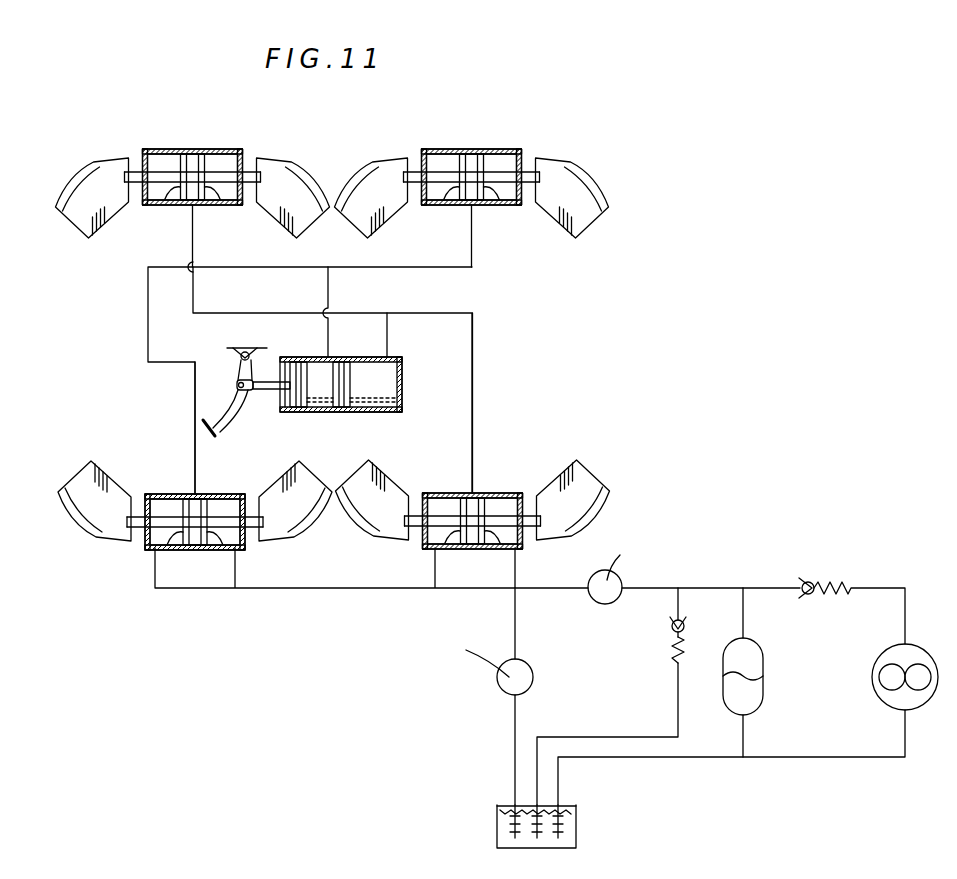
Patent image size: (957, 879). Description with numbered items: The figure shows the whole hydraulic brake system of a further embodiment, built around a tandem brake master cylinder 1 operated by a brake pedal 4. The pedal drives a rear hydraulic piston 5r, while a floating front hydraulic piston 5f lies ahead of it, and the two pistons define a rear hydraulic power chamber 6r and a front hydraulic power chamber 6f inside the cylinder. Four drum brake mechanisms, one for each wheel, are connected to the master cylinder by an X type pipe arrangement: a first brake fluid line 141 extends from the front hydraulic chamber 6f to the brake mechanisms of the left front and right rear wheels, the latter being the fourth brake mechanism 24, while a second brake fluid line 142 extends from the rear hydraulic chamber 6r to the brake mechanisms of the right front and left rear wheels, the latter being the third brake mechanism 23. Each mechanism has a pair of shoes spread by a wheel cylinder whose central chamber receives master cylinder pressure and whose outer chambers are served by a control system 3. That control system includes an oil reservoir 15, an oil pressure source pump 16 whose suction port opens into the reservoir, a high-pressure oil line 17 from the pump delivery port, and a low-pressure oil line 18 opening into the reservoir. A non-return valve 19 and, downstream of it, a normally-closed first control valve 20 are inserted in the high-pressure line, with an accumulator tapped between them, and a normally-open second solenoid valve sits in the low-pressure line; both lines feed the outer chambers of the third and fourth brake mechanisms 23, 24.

The brake master cylinder 1 is at (339, 389).
The control system 3 is at (759, 559).
The brake pedal 4 is at (232, 419).
The rear hydraulic piston 5r is at (297, 412).
The front hydraulic piston 5f is at (345, 412).
The rear hydraulic power chamber 6r is at (316, 372).
The front hydraulic power chamber 6f is at (371, 374).
The first brake fluid line 141 is at (418, 313).
The second brake fluid line 142 is at (322, 292).
The oil reservoir 15 is at (577, 828).
The oil pressure source pump 16 is at (872, 677).
The high-pressure oil line 17 is at (698, 588).
The low-pressure oil line 18 is at (516, 631).
The non-return valve 19 is at (808, 582).
The first control valve 20 is at (600, 604).
The third brake mechanism 23 is at (126, 561).
The fourth brake mechanism 24 is at (528, 470).